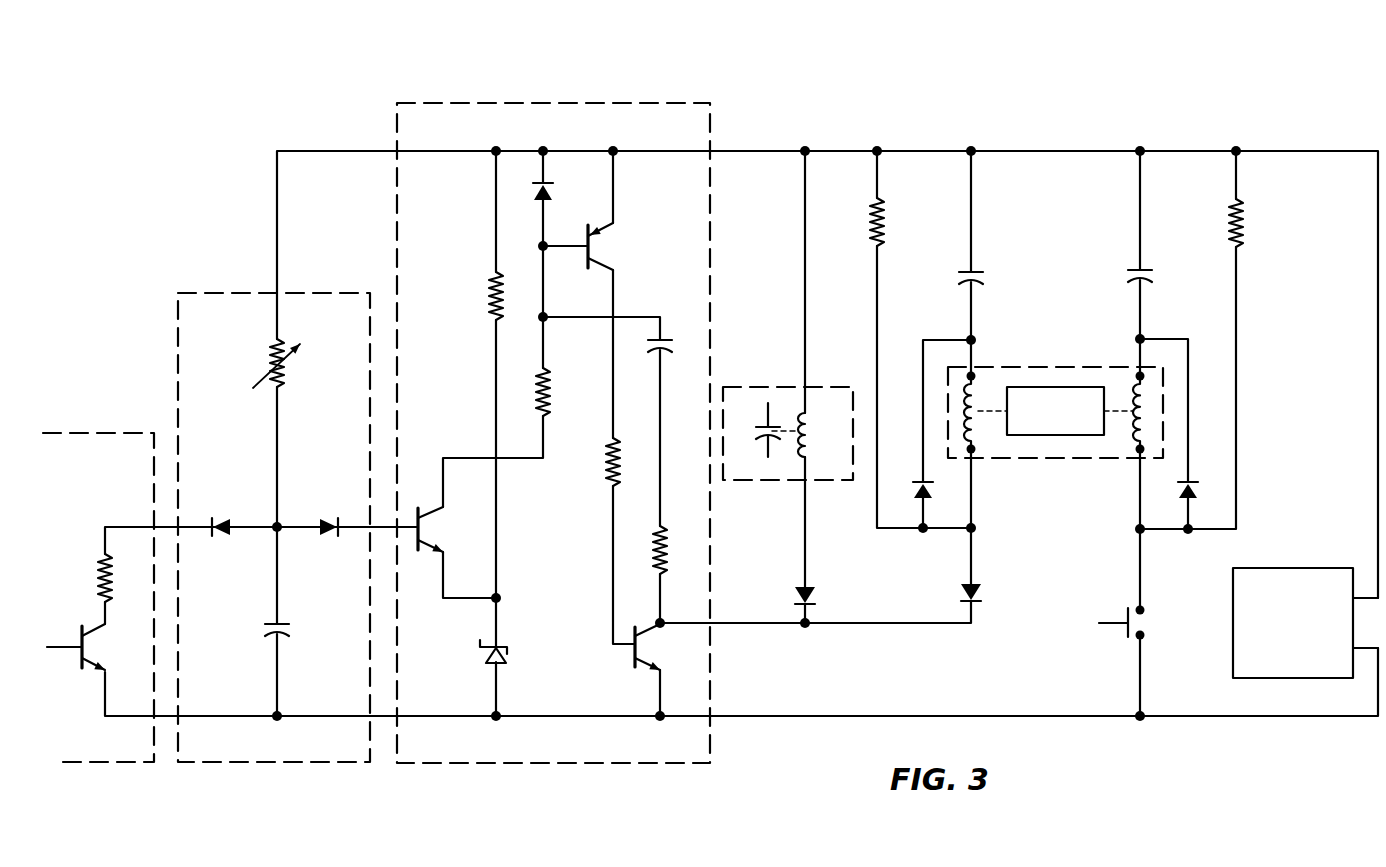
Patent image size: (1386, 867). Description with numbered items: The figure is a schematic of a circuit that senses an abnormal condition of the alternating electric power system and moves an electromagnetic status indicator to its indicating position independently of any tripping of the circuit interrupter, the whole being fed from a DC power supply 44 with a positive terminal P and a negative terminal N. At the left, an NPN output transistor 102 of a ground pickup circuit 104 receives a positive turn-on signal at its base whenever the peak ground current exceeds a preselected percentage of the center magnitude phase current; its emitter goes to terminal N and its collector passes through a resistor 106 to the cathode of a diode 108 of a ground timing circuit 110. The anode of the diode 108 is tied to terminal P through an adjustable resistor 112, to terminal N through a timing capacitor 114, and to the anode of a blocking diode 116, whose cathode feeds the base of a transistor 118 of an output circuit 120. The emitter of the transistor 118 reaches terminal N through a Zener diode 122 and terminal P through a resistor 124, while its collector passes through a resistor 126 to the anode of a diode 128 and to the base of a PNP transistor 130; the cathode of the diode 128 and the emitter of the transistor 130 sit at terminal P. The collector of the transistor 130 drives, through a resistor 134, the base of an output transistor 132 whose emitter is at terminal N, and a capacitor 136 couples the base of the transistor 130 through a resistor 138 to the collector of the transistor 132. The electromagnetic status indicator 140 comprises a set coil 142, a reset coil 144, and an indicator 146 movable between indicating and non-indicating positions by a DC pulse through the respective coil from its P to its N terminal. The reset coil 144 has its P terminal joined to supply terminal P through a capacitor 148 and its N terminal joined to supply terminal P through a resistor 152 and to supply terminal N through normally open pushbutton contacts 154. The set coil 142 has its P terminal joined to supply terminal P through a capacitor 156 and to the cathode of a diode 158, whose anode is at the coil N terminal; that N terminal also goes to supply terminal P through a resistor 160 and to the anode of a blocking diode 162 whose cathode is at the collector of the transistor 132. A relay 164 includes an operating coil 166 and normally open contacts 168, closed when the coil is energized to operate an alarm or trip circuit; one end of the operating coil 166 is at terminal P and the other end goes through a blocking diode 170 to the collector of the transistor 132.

The DC power supply 44 is at (1258, 571).
The output transistor 102 is at (86, 647).
The ground pickup circuit 104 is at (97, 433).
The resistor 106 is at (123, 578).
The diode 108 is at (230, 519).
The ground timing circuit 110 is at (224, 293).
The adjustable resistor 112 is at (286, 364).
The timing capacitor 114 is at (296, 633).
The blocking diode 116 is at (330, 519).
The transistor 118 is at (440, 529).
The output circuit 120 is at (397, 135).
The Zener diode 122 is at (511, 657).
The resistor 124 is at (513, 296).
The resistor 126 is at (561, 392).
The diode 128 is at (561, 195).
The PNP transistor 130 is at (611, 246).
The output transistor 132 is at (658, 647).
The resistor 134 is at (632, 462).
The capacitor 136 is at (673, 355).
The resistor 138 is at (679, 550).
The electromagnetic status indicator 140 is at (1040, 367).
The set coil 142 is at (995, 434).
The reset coil 144 is at (1132, 392).
The indicator 146 is at (1063, 435).
The capacitor 148 is at (1161, 278).
The resistor 152 is at (1256, 223).
The pushbutton contacts 154 is at (1139, 623).
The capacitor 156 is at (990, 278).
The diode 158 is at (941, 493).
The resistor 160 is at (895, 222).
The blocking diode 162 is at (989, 596).
The relay 164 is at (748, 480).
The operating coil 166 is at (822, 435).
The normally open contacts 168 is at (762, 433).
The blocking diode 170 is at (822, 598).